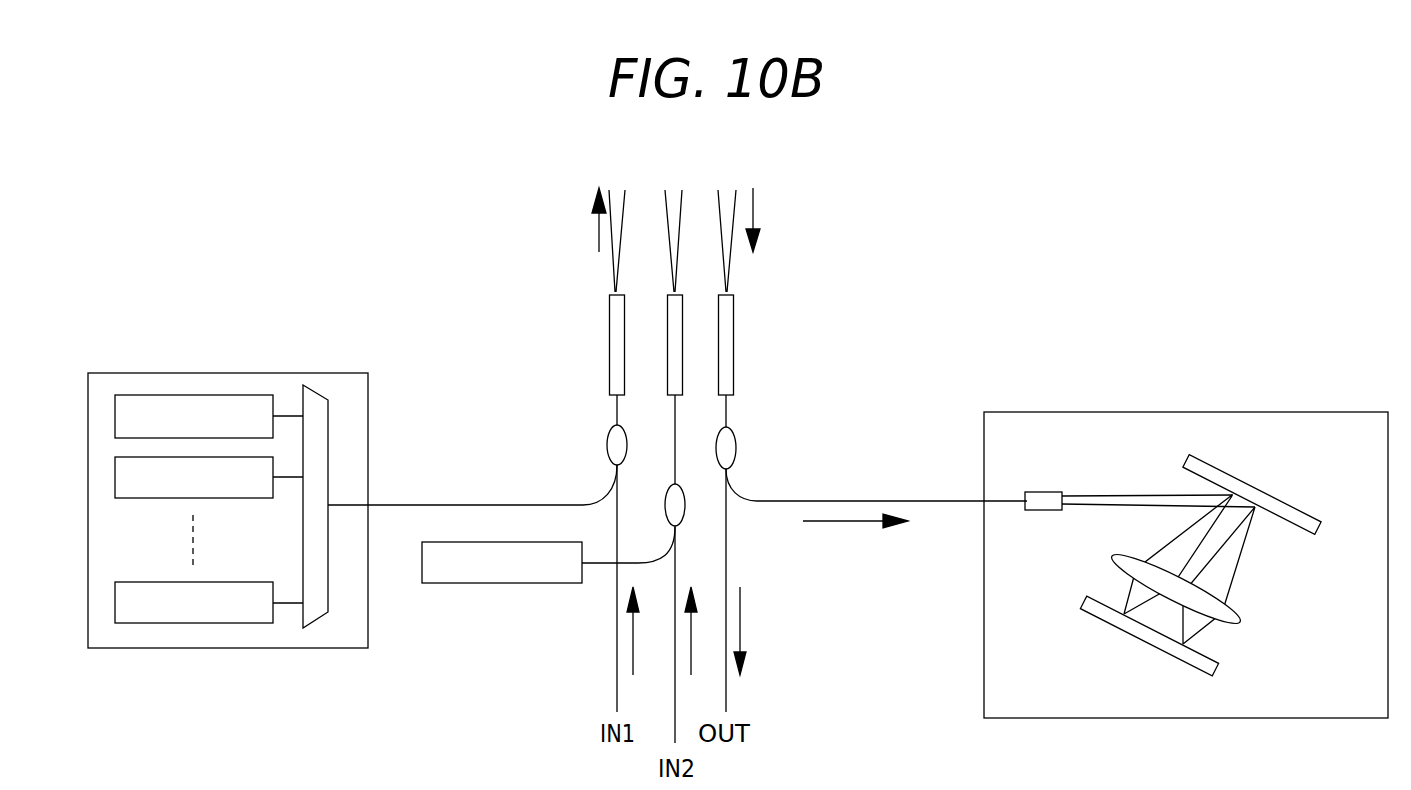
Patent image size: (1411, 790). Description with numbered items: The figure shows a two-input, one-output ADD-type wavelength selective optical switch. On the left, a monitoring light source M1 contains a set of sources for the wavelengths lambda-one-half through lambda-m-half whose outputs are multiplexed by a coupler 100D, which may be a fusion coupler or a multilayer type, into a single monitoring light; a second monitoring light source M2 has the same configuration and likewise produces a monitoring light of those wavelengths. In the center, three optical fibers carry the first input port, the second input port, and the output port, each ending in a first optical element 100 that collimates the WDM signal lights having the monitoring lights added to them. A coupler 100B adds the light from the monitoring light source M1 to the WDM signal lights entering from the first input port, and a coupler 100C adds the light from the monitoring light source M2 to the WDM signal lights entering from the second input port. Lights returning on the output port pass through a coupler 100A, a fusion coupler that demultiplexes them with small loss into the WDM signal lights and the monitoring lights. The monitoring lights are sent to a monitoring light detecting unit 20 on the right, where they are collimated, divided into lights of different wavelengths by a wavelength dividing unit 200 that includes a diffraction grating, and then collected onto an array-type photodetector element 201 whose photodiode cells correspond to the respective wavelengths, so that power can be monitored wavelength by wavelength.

The monitoring light source M1 is at (143, 373).
The monitoring light source M2 is at (502, 562).
The first optical element 100 is at (727, 315).
The coupler 100A is at (735, 443).
The coupler 100B is at (607, 450).
The coupler 100C is at (678, 500).
The coupler 100D is at (318, 613).
The monitoring light detecting unit 20 is at (1186, 522).
The wavelength dividing unit 200 is at (1207, 465).
The array-type photodetector element 201 is at (1160, 643).